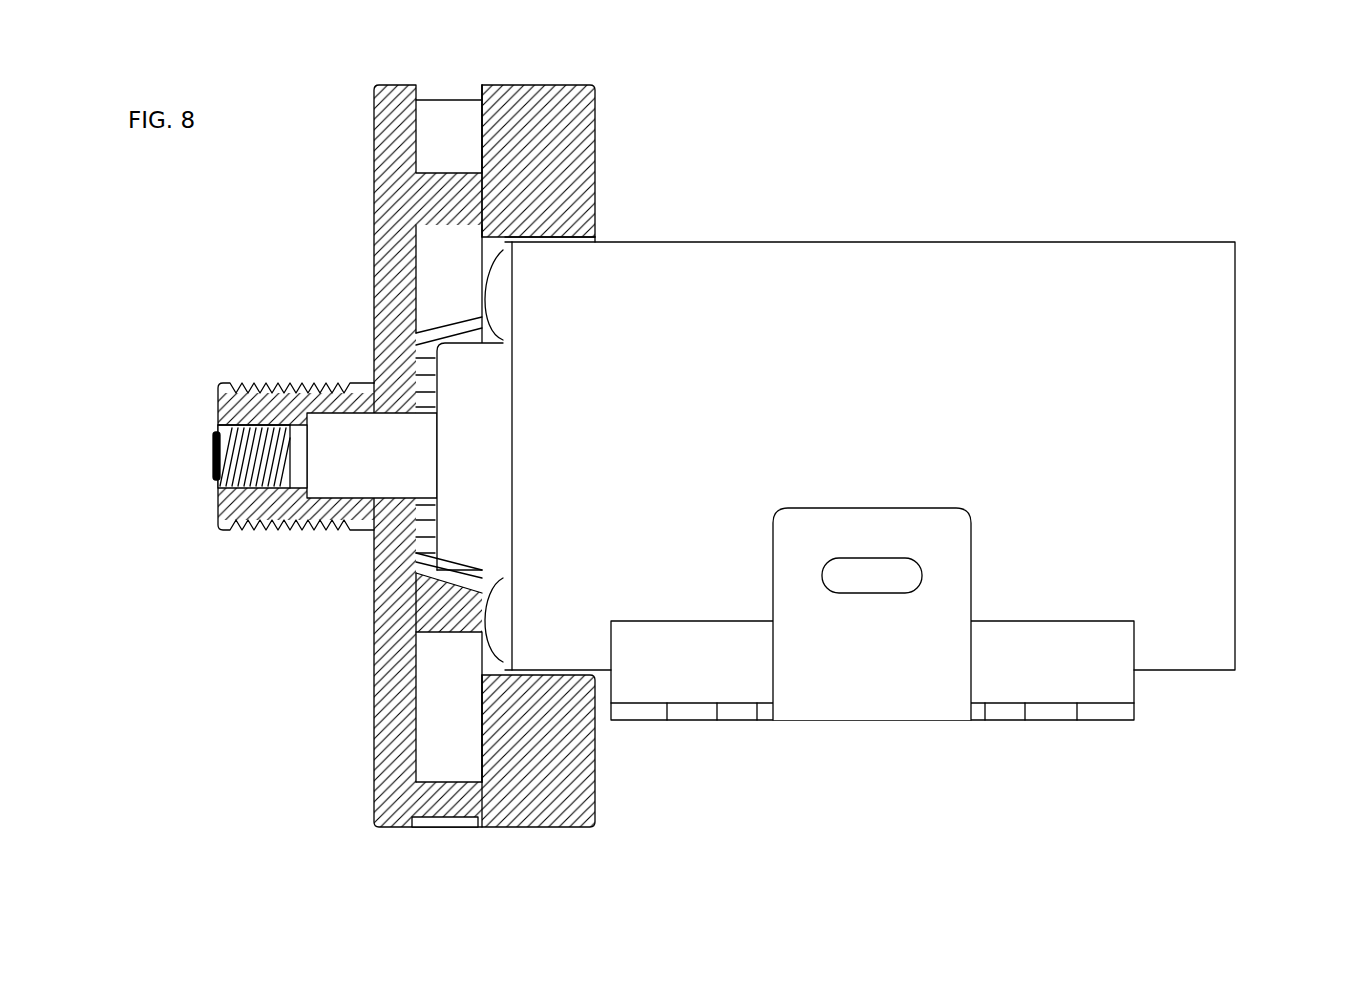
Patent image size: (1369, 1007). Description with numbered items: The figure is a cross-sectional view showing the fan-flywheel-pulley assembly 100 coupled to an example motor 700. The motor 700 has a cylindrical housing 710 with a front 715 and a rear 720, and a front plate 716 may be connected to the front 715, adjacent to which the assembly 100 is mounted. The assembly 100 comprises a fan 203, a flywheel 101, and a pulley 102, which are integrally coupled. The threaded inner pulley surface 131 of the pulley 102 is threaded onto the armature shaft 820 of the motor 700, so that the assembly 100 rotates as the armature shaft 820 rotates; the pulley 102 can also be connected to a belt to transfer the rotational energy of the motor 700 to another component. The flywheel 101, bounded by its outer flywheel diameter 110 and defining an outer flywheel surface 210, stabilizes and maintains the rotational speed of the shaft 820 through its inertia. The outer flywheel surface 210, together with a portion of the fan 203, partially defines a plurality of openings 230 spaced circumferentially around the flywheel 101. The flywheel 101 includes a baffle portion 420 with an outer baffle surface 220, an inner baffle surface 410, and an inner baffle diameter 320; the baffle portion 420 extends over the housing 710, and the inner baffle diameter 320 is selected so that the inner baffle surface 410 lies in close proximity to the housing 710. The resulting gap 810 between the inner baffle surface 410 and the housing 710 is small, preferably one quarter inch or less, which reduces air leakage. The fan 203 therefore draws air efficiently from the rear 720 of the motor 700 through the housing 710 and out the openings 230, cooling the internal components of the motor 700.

The fan-flywheel-pulley assembly 100 is at (340, 190).
The flywheel 101 is at (445, 92).
The pulley 102 is at (288, 378).
The outer flywheel diameter 110 is at (595, 90).
The inner pulley surface 131 is at (240, 425).
The fan 203 is at (428, 835).
The outer flywheel surface 210 is at (393, 92).
The outer baffle surface 220 is at (585, 86).
The openings 230 is at (440, 715).
The inner baffle diameter 320 is at (595, 212).
The inner baffle surface 410 is at (515, 237).
The baffle portion 420 is at (508, 74).
The motor 700 is at (937, 405).
The housing 710 is at (1000, 275).
The front 715 is at (190, 458).
The front plate 716 is at (510, 309).
The rear 720 is at (1260, 433).
The gap 810 is at (560, 237).
The armature shaft 820 is at (218, 455).